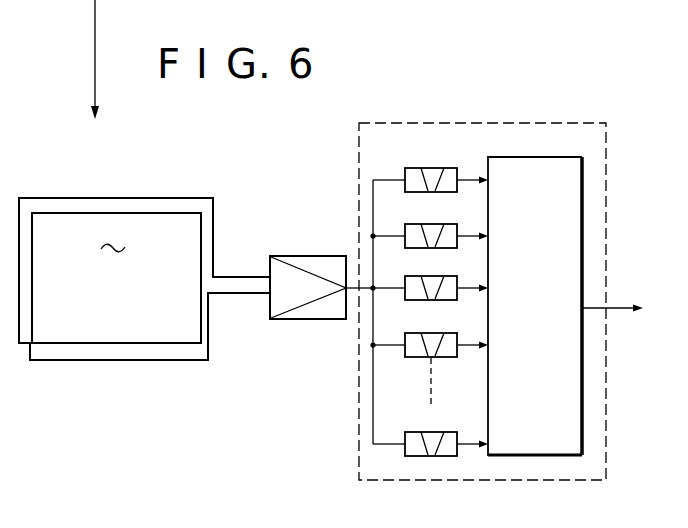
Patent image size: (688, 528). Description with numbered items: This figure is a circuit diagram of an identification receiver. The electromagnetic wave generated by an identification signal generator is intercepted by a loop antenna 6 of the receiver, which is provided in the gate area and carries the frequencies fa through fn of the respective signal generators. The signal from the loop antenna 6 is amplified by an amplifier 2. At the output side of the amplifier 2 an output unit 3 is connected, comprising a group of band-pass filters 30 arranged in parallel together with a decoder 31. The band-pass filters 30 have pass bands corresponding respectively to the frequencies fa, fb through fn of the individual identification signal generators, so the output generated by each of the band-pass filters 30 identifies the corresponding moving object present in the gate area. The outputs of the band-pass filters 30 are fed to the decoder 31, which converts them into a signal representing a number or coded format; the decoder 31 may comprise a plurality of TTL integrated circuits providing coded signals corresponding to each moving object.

The loop antenna 6 is at (127, 198).
The amplifier 2 is at (320, 256).
The output unit 3 is at (372, 395).
The band-pass filters 30 is at (457, 168).
The decoder 31 is at (583, 168).